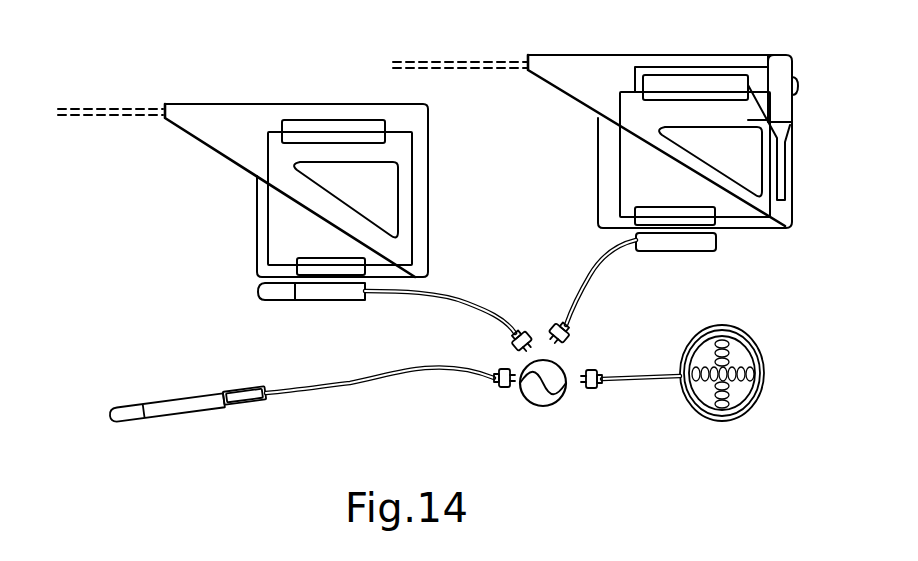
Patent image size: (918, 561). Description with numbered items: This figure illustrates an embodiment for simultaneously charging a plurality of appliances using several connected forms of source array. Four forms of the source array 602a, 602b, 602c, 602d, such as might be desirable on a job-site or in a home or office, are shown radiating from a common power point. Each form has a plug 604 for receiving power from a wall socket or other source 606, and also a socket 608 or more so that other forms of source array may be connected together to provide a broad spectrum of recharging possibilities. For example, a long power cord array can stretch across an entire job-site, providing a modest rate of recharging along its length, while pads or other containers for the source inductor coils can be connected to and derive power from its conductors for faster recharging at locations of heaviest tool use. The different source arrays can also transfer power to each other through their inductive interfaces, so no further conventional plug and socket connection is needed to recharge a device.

The source array form 602a is at (330, 390).
The source array form 602b is at (438, 299).
The source array form 602c is at (593, 275).
The source array form 602d is at (638, 385).
The plug 604 is at (553, 325).
The source 606 is at (542, 412).
The socket 608 is at (123, 418).